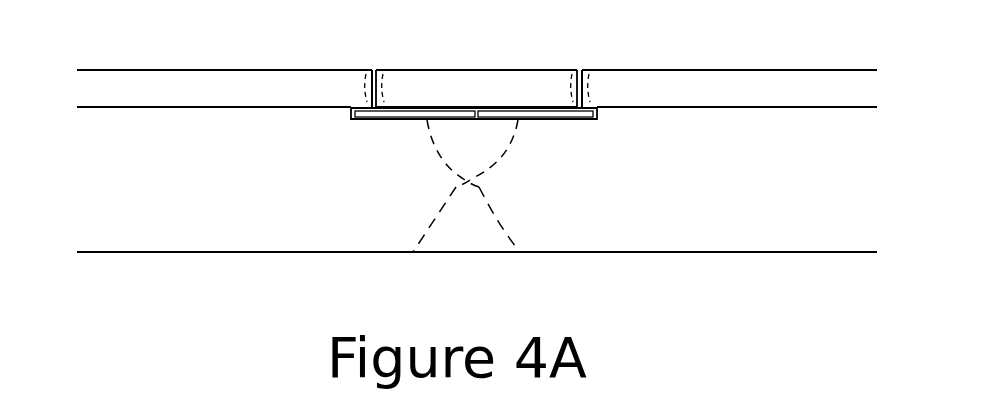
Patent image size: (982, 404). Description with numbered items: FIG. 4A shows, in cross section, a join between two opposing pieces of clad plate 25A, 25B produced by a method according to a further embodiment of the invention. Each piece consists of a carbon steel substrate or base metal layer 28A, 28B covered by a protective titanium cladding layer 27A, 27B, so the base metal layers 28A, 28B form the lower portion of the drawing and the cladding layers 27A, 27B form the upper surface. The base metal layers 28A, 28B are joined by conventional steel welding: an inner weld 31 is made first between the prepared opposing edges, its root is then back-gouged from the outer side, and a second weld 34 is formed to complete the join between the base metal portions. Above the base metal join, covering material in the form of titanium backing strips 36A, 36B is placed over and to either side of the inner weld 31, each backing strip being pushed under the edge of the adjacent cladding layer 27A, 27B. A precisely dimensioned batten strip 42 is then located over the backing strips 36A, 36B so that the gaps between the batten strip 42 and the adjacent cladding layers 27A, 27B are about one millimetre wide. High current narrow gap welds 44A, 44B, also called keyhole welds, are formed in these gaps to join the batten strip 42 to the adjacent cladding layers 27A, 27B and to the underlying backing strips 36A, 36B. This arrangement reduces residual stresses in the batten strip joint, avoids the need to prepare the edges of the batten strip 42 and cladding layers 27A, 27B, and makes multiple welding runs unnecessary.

The piece of clad plate 25A is at (233, 265).
The piece of clad plate 25B is at (662, 267).
The protective cladding layer 27A is at (308, 97).
The protective cladding layer 27B is at (688, 97).
The base metal layer 28A is at (308, 191).
The base metal layer 28B is at (686, 192).
The inner weld 31 is at (483, 159).
The second weld 34 is at (482, 232).
The titanium backing strip 36A is at (388, 115).
The titanium backing strip 36B is at (565, 116).
The batten strip 42 is at (489, 100).
The high current narrow gap weld 44A is at (371, 70).
The high current narrow gap weld 44B is at (603, 50).